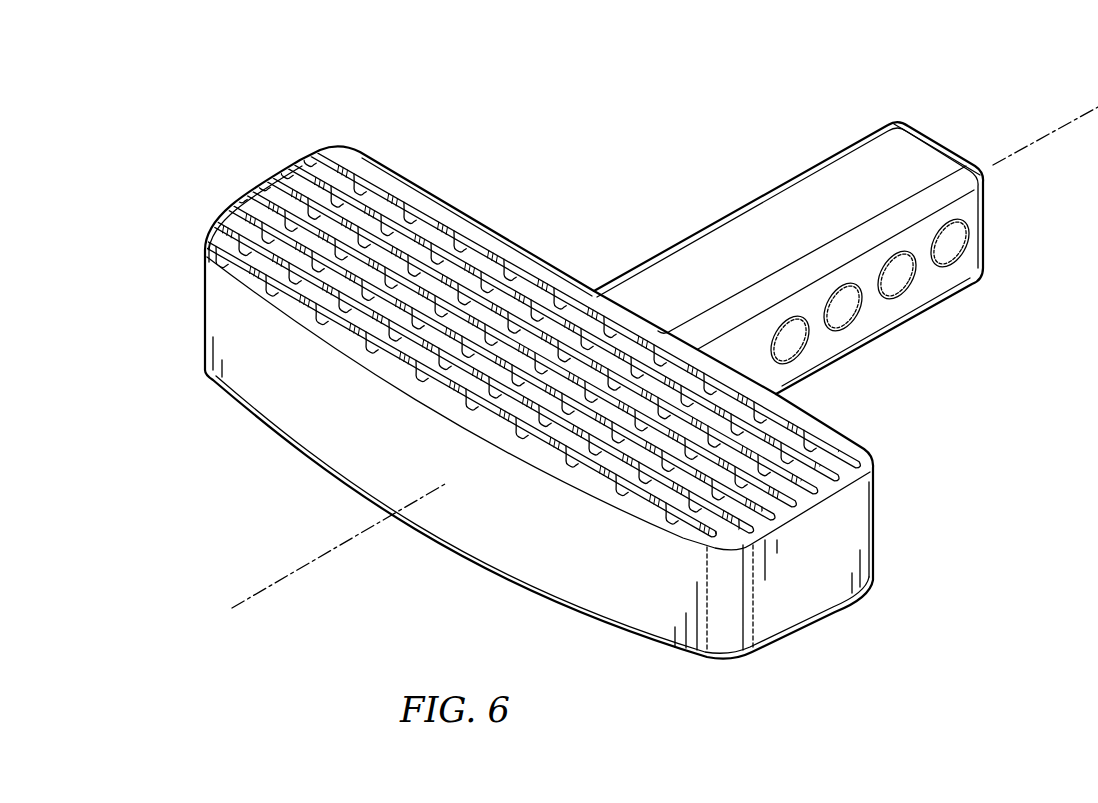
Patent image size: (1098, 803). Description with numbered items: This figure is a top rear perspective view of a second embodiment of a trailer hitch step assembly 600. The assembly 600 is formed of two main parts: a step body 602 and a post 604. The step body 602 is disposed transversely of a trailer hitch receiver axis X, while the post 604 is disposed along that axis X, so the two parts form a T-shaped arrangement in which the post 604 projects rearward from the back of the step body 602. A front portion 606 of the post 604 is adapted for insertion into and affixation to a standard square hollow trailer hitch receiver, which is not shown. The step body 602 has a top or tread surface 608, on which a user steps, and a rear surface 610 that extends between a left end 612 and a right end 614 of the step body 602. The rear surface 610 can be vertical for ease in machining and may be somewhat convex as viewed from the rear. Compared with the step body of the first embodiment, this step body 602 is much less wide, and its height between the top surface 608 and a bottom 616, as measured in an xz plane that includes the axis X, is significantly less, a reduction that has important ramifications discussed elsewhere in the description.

The trailer hitch step assembly 600 is at (499, 334).
The step body 602 is at (499, 334).
The post 604 is at (788, 238).
The front portion 606 is at (903, 150).
The top or tread surface 608 is at (515, 300).
The rear surface 610 is at (337, 453).
The left end 612 is at (250, 195).
The right end 614 is at (818, 590).
The bottom 616 is at (493, 570).
The trailer hitch receiver axis X is at (1052, 132).